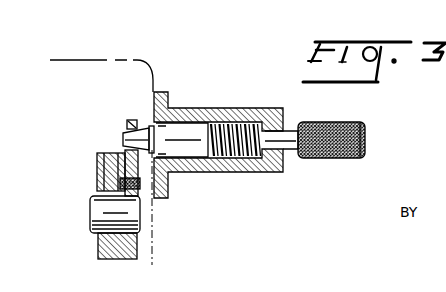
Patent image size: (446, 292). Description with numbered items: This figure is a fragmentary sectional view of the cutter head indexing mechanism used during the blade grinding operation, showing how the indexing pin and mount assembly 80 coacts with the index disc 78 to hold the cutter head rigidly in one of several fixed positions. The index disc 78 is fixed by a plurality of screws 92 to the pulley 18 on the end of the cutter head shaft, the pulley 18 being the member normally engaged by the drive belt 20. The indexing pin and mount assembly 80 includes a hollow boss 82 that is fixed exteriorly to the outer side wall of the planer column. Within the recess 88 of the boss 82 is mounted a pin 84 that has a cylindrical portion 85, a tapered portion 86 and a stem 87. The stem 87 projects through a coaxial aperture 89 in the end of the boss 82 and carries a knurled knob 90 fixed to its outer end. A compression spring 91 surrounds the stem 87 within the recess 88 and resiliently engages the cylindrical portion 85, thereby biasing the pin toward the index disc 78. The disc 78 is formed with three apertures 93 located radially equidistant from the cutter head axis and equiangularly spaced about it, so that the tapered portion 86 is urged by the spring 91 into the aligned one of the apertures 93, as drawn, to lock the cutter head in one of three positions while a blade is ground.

The pulley 18 is at (98, 188).
The belt 20 is at (118, 147).
The index disc 78 is at (140, 245).
The indexing pin and mount assembly 80 is at (198, 108).
The hollow boss 82 is at (268, 173).
The pin 84 is at (288, 126).
The cylindrical portion 85 is at (188, 173).
The tapered portion 86 is at (147, 131).
The stem 87 is at (290, 152).
The recess 88 is at (251, 173).
The coaxial aperture 89 is at (280, 109).
The knurled knob 90 is at (366, 125).
The compression spring 91 is at (235, 108).
The screws 92 is at (140, 186).
The apertures 93 is at (128, 124).